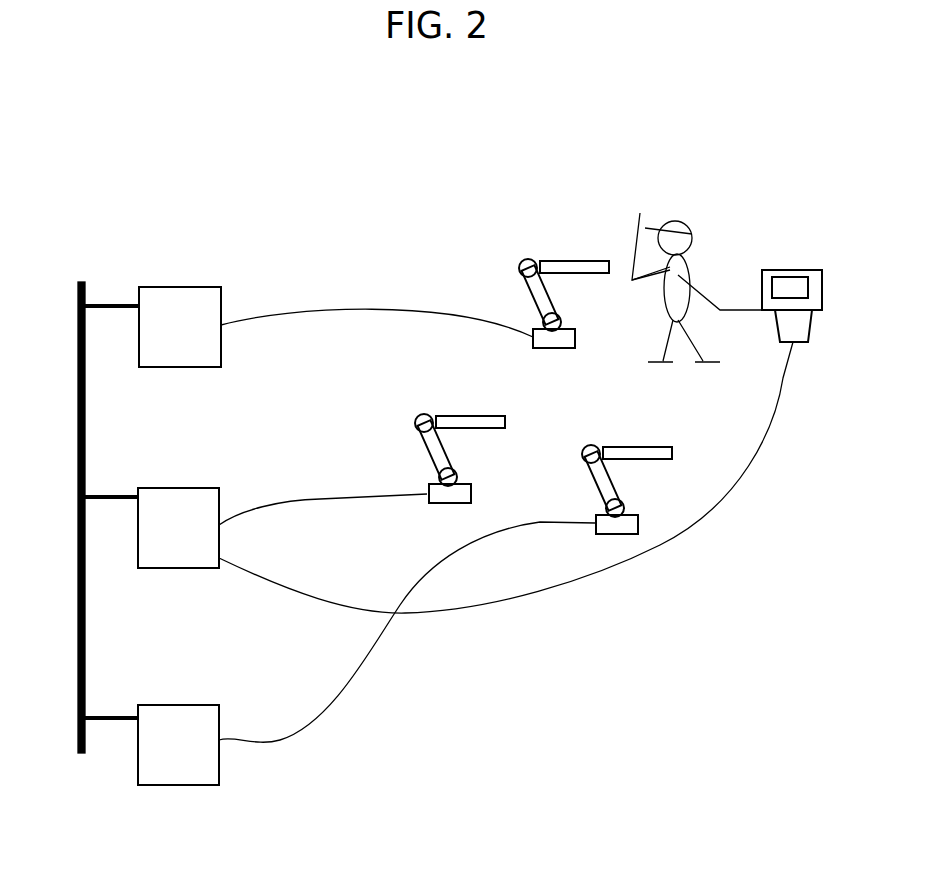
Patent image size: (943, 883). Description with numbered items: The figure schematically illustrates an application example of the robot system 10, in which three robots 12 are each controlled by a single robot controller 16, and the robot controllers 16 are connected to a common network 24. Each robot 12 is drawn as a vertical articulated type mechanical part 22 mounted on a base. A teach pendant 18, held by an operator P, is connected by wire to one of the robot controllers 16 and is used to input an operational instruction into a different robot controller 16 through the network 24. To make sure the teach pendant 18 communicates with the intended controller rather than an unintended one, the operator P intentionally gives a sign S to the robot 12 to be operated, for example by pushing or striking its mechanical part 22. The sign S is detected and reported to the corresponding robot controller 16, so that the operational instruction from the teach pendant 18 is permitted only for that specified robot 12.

The robot system 10 is at (505, 725).
The robot 12 is at (546, 247).
The robot controller 16 is at (173, 285).
The teach pendant 18 is at (784, 267).
The mechanical part 22 is at (420, 453).
The network 24 is at (76, 592).
The operator P is at (690, 221).
The sign S is at (625, 225).